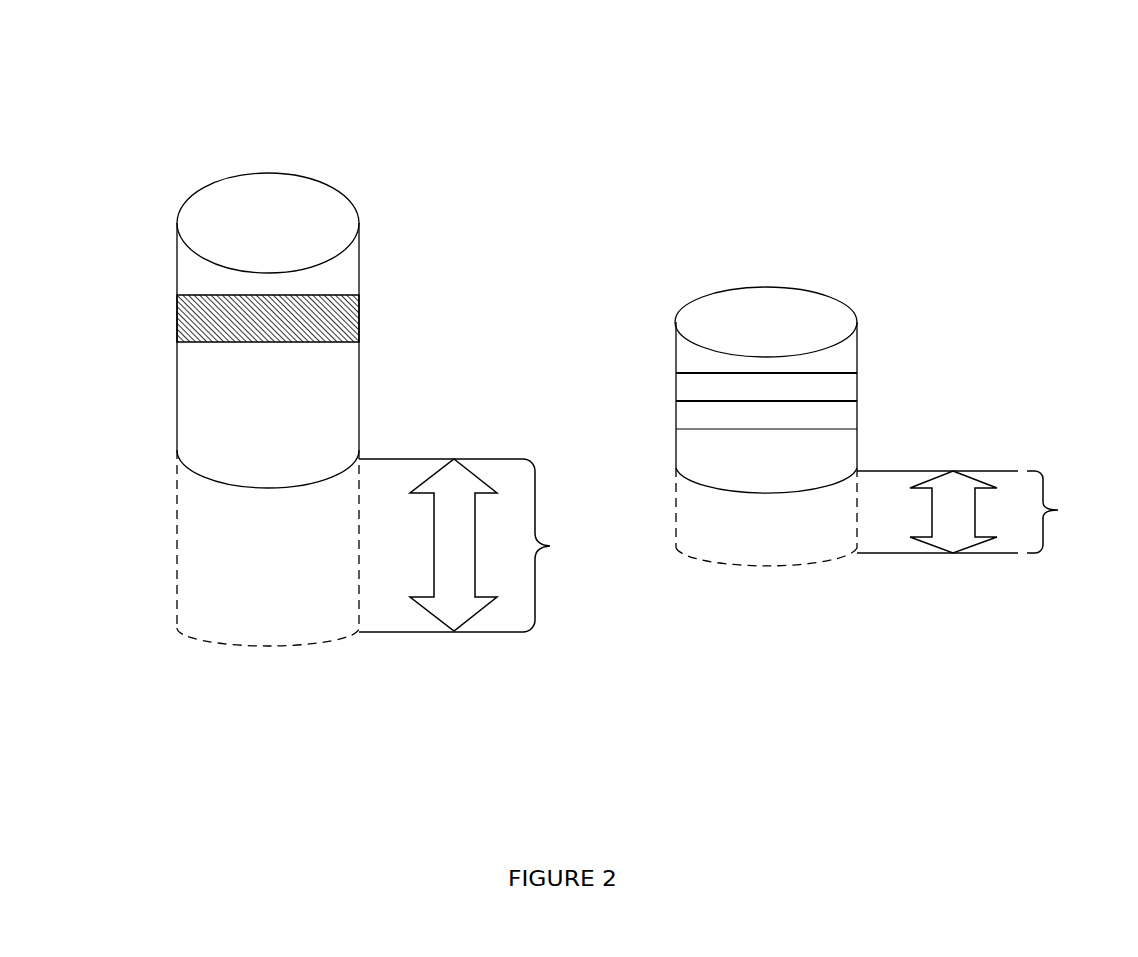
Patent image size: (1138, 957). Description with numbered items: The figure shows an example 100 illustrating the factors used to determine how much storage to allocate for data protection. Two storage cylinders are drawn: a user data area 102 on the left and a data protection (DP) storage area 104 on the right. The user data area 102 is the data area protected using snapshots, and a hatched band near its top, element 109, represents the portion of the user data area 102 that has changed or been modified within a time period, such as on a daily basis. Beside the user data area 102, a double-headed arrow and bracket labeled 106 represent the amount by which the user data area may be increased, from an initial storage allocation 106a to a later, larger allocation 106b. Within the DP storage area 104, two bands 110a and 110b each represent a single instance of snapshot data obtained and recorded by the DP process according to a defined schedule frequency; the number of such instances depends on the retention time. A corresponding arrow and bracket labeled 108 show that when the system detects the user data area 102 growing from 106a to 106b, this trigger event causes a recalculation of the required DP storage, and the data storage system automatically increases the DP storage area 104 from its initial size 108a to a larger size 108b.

The example 100 is at (128, 58).
The user data area 102 is at (314, 207).
The DP storage area 104 is at (823, 303).
The amount by which the user data area may be increased 106 is at (505, 545).
The initial storage allocation 106a is at (495, 457).
The increased user data area size 106b is at (487, 632).
The DP storage area size adjustment 108 is at (1010, 512).
The initial DP storage area size 108a is at (975, 470).
The increased DP storage area size 108b is at (983, 555).
The changed portion of the user data area 109 is at (177, 319).
The snapshot data instance 110a is at (857, 395).
The snapshot data instance 110b is at (845, 417).